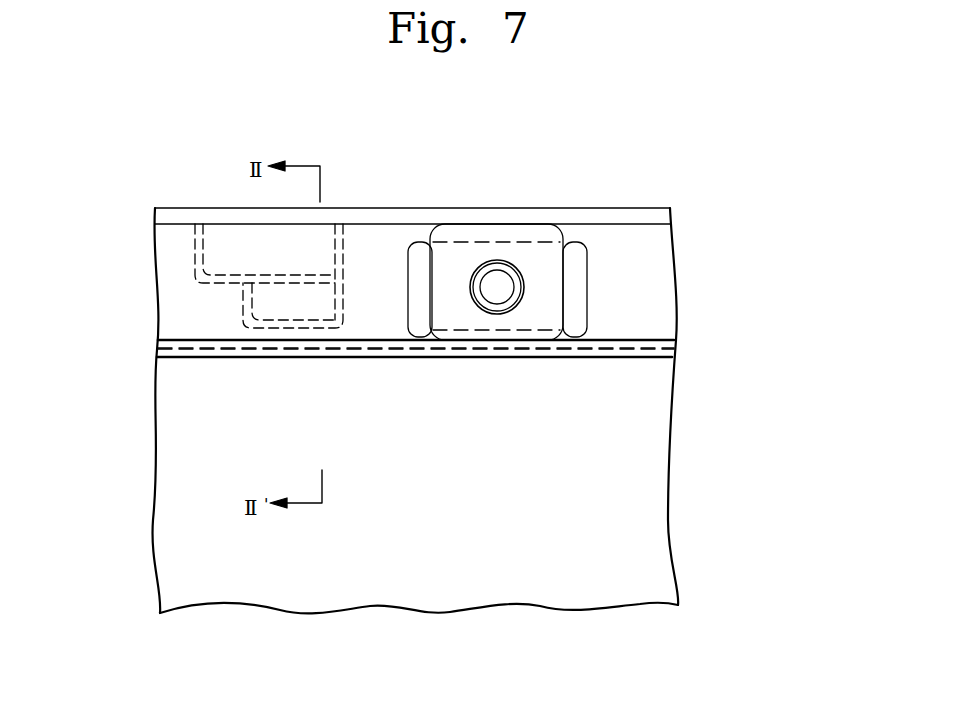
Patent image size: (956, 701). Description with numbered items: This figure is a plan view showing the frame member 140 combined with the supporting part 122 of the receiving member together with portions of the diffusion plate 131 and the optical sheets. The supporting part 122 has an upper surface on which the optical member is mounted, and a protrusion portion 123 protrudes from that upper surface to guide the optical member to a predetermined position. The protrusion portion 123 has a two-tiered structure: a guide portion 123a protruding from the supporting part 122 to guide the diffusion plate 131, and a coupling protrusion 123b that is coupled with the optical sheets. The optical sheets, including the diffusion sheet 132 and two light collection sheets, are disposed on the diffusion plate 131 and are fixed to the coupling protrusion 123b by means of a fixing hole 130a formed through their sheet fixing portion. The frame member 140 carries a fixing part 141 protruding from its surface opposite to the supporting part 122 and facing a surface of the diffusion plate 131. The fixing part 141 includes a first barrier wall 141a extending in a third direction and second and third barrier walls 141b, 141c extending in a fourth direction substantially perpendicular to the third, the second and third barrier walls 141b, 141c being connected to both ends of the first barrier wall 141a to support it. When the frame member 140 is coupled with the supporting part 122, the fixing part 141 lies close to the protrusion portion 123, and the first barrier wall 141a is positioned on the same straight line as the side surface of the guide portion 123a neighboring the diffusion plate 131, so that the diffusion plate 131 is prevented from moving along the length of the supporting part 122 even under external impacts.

The supporting part 122 is at (655, 245).
The protrusion portion 123 is at (508, 223).
The guide portion 123a is at (572, 257).
The coupling protrusion 123b is at (474, 241).
The fixing hole 130a is at (522, 287).
The diffusion plate 131 is at (620, 357).
The diffusion sheet 132 is at (620, 343).
The frame member 140 is at (190, 359).
The fixing part 141 is at (297, 342).
The first barrier wall 141a is at (297, 327).
The second barrier wall 141b is at (247, 303).
The third barrier wall 141c is at (367, 324).